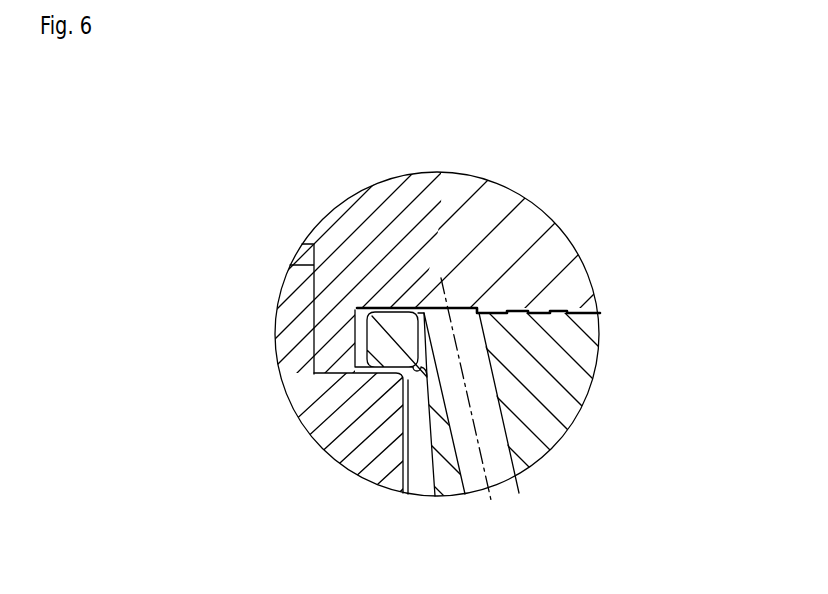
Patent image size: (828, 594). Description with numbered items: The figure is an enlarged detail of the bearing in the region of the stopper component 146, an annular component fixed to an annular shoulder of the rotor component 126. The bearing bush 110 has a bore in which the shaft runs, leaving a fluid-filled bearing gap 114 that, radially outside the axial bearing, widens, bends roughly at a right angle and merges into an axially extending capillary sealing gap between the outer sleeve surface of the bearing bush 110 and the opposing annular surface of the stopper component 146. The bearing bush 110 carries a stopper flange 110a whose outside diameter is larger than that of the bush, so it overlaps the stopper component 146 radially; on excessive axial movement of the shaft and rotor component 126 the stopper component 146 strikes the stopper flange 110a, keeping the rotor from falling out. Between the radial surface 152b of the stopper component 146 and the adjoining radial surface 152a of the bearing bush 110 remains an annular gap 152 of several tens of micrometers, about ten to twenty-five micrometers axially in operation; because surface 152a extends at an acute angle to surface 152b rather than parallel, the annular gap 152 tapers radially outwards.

The bearing bush 110 is at (553, 365).
The stopper flange 110a is at (393, 332).
The bearing gap 114 is at (414, 308).
The rotor component 126 is at (334, 317).
The stopper component 146 is at (365, 452).
The annular gap 152 is at (355, 373).
The radial surface of the bearing bush 152a is at (424, 308).
The radial surface of the stopper component 152b is at (391, 373).